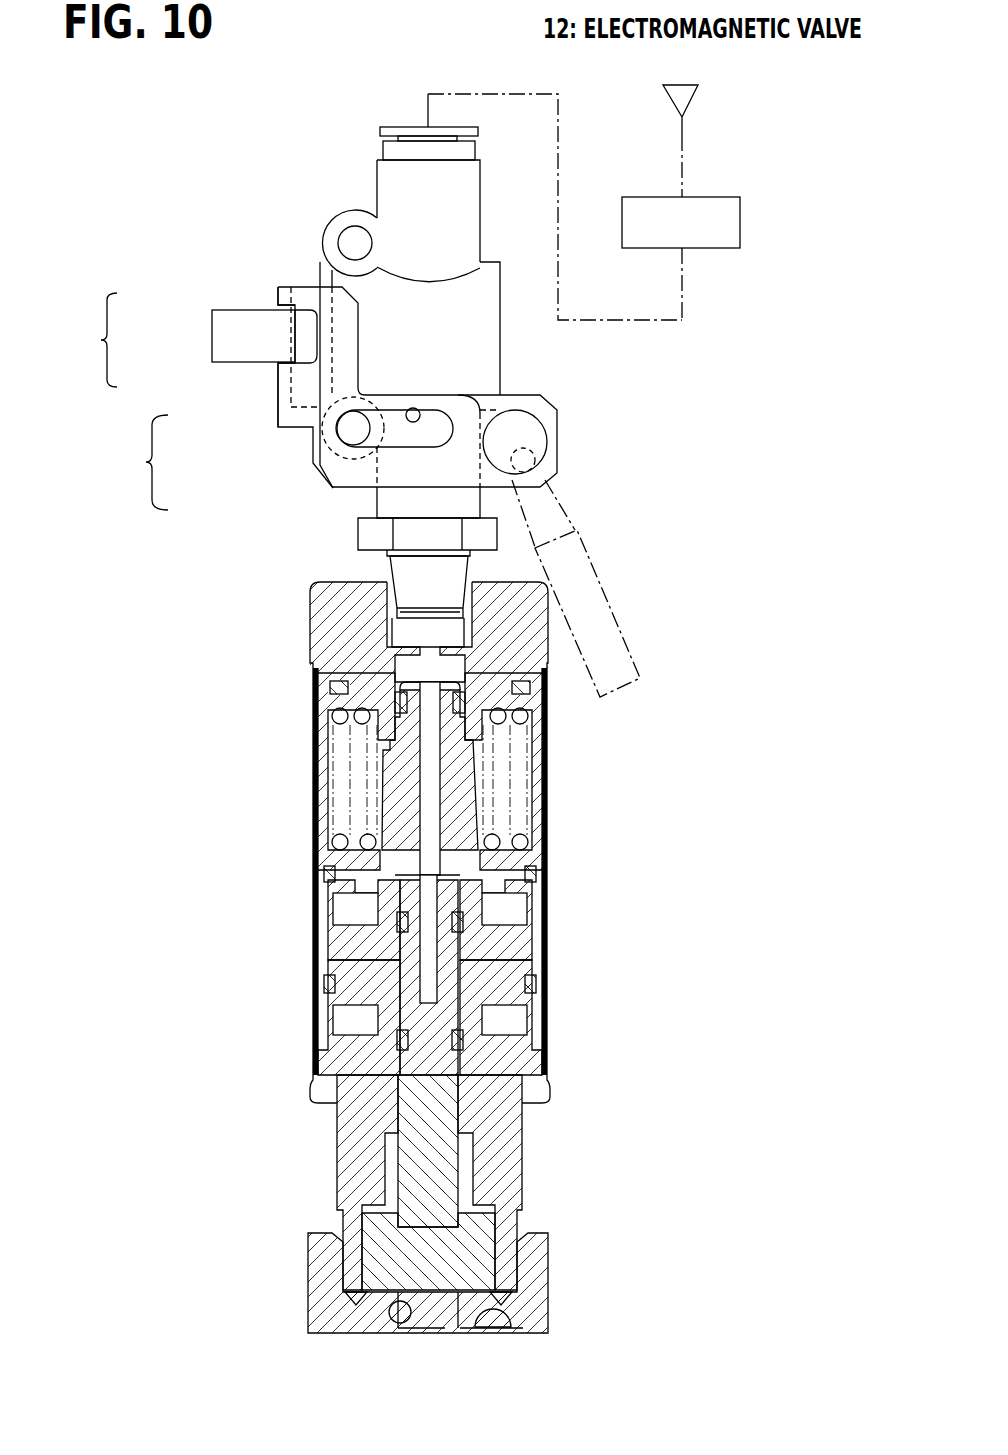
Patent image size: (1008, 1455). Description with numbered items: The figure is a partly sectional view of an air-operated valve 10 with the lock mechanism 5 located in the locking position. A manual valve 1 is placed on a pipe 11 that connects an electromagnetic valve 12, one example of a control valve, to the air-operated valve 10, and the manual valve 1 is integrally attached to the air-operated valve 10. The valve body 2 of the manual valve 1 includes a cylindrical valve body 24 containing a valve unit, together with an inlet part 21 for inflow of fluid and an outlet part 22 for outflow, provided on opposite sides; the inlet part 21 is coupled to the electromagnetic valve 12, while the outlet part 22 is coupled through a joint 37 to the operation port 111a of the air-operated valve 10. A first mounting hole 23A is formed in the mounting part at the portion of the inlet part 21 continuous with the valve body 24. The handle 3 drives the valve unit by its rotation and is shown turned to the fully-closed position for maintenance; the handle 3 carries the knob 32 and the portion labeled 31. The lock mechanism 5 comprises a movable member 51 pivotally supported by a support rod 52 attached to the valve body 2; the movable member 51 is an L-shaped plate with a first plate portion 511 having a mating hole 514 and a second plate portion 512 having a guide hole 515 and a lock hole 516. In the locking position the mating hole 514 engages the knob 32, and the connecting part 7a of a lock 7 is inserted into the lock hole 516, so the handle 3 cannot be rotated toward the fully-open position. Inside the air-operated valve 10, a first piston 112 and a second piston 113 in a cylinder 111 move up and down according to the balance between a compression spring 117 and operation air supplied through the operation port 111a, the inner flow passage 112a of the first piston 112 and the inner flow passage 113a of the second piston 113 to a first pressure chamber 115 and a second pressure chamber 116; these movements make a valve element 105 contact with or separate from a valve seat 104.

The manual valve 1 is at (493, 418).
The valve body 2 is at (409, 291).
The handle 3 is at (201, 340).
The lock mechanism 5 is at (283, 371).
The lock 7 is at (597, 572).
The connecting part 7a is at (562, 490).
The air-operated valve 10 is at (394, 966).
The pipe 11 is at (683, 140).
The electromagnetic valve 12 is at (742, 220).
The inlet part 21 is at (383, 178).
The outlet part 22 is at (380, 505).
The first mounting hole 23A is at (350, 238).
The cylindrical valve body 24 is at (490, 285).
The connector body 31 is at (302, 320).
The knob 32 is at (225, 352).
The joint 37 is at (366, 540).
The movable member 51 is at (280, 413).
The support rod 52 is at (353, 437).
The valve seat 104 is at (392, 1315).
The valve element 105 is at (365, 1305).
The cylinder 111 is at (545, 888).
The operation port 111a is at (392, 628).
The first piston 112 is at (513, 778).
The inner flow passage 112a is at (428, 778).
The second piston 113 is at (519, 975).
The inner flow passage 113a is at (424, 940).
The first pressure chamber 115 is at (350, 912).
The second pressure chamber 116 is at (350, 1020).
The compression spring 117 is at (340, 727).
The first plate portion 511 is at (281, 299).
The second plate portion 512 is at (307, 290).
The mating hole 514 is at (280, 353).
The guide hole 515 is at (395, 398).
The lock hole 516 is at (540, 440).